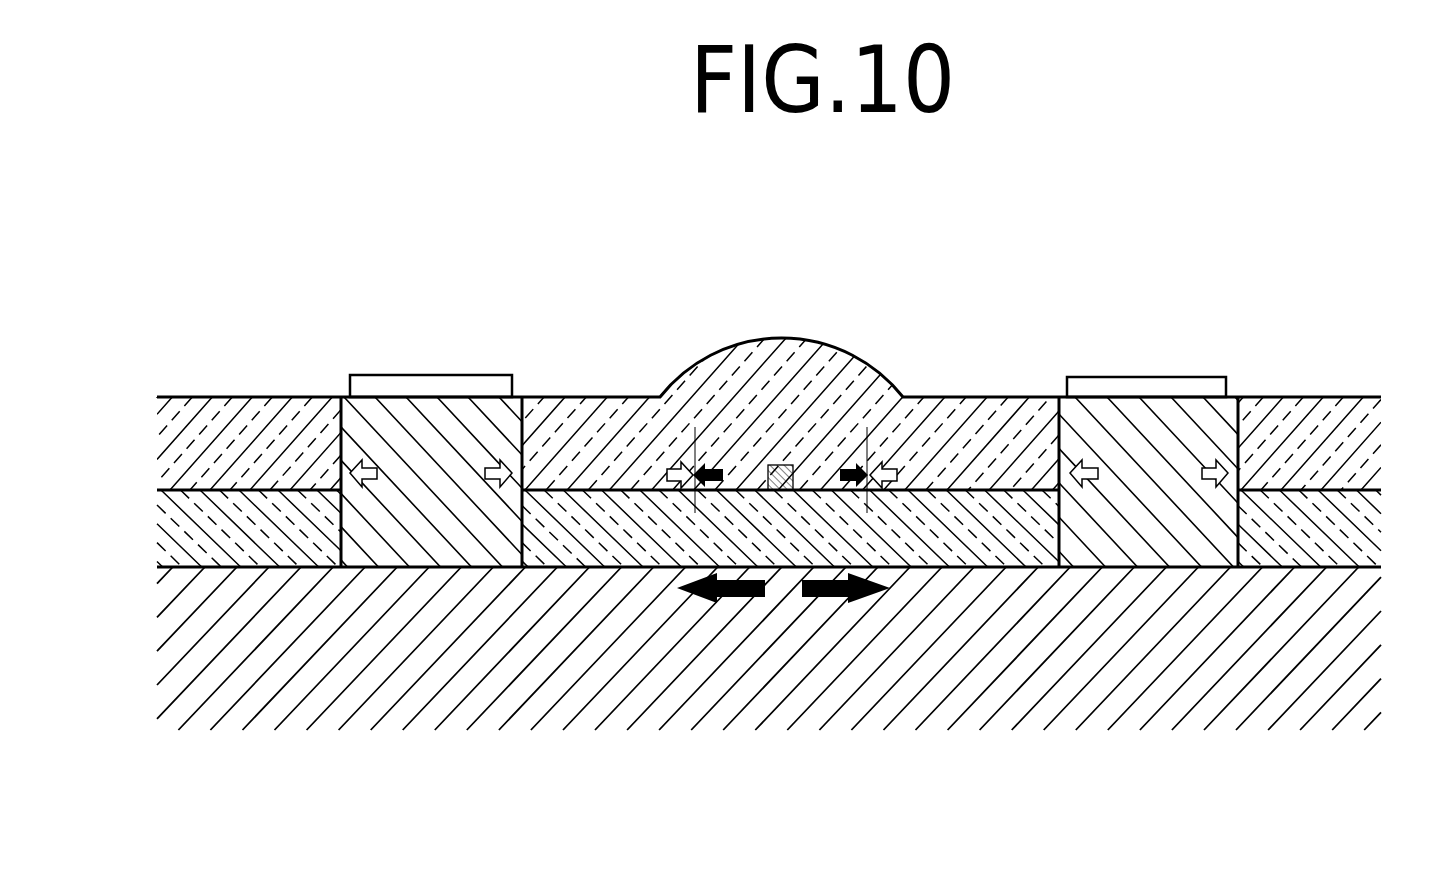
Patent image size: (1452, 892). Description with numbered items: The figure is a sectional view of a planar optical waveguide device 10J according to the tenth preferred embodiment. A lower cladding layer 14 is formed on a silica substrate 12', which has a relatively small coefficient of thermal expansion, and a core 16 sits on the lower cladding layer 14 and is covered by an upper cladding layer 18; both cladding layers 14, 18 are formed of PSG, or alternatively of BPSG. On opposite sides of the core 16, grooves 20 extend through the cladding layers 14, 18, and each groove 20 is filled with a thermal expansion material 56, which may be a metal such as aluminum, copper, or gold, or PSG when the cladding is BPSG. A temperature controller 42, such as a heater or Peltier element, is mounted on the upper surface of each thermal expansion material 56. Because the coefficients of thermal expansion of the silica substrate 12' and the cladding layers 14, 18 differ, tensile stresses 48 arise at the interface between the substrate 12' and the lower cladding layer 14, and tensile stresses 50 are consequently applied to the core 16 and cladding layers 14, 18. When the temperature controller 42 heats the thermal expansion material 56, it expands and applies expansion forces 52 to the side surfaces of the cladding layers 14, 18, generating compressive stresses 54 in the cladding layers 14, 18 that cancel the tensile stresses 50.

The planar optical waveguide device 10J is at (984, 374).
The silica substrate 12' is at (769, 689).
The lower cladding layer 14 is at (1352, 530).
The core 16 is at (780, 464).
The upper cladding layer 18 is at (738, 412).
The groove 20 is at (345, 412).
The temperature controller 42 is at (405, 374).
The tensile stresses 48 is at (705, 603).
The tensile stresses 50 is at (710, 462).
The expansion forces 52 is at (368, 458).
The compressive stresses 54 is at (670, 464).
The thermal expansion material 56 is at (458, 455).